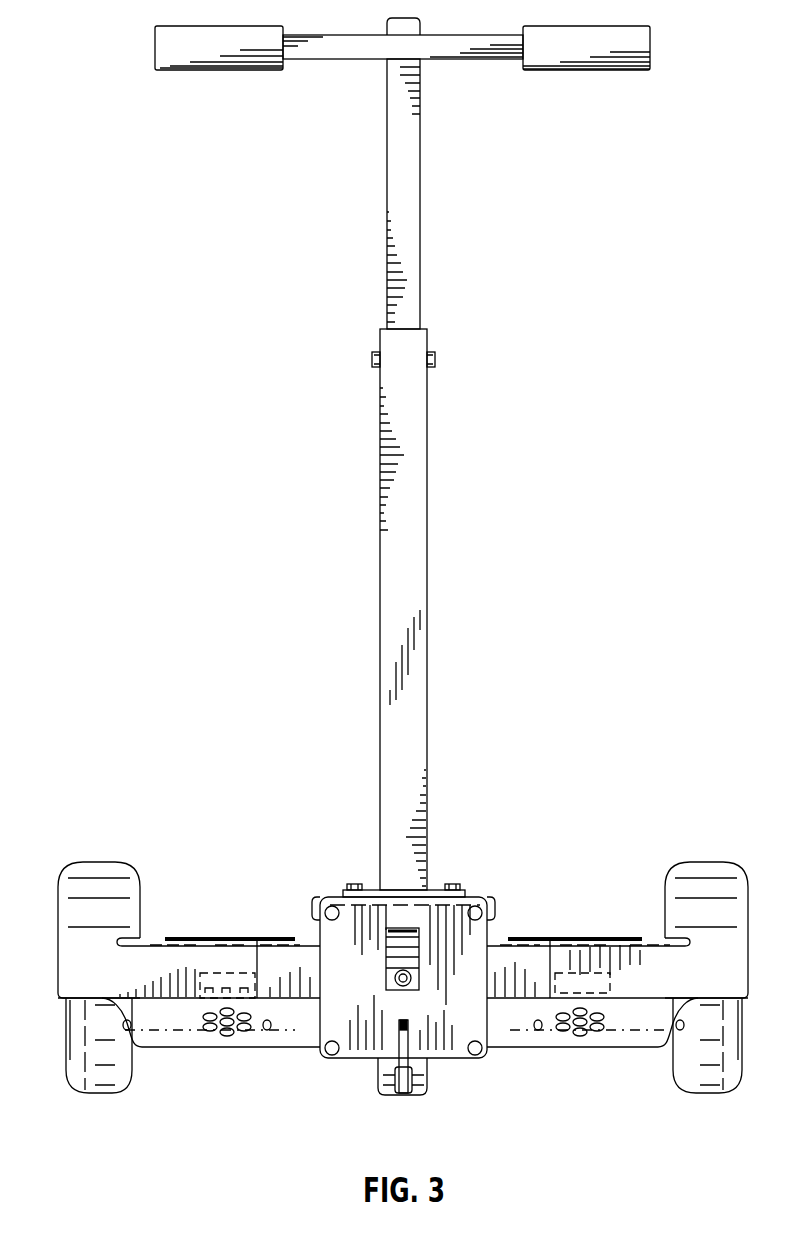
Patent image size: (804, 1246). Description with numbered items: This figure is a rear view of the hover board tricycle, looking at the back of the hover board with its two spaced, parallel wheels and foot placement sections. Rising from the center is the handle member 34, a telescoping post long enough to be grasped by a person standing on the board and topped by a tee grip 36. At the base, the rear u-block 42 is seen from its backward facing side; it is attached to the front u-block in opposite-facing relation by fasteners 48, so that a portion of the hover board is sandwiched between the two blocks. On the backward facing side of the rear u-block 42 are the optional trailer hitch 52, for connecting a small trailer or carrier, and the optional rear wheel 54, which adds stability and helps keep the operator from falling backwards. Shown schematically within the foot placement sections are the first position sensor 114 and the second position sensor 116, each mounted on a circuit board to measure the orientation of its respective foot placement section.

The handle member 34 is at (427, 522).
The tee grip 36 is at (567, 70).
The rear u-block 42 is at (475, 945).
The fasteners 48 is at (330, 903).
The trailer hitch 52 is at (403, 990).
The rear wheel 54 is at (405, 1075).
The first position sensor 114 is at (610, 975).
The second position sensor 116 is at (222, 970).